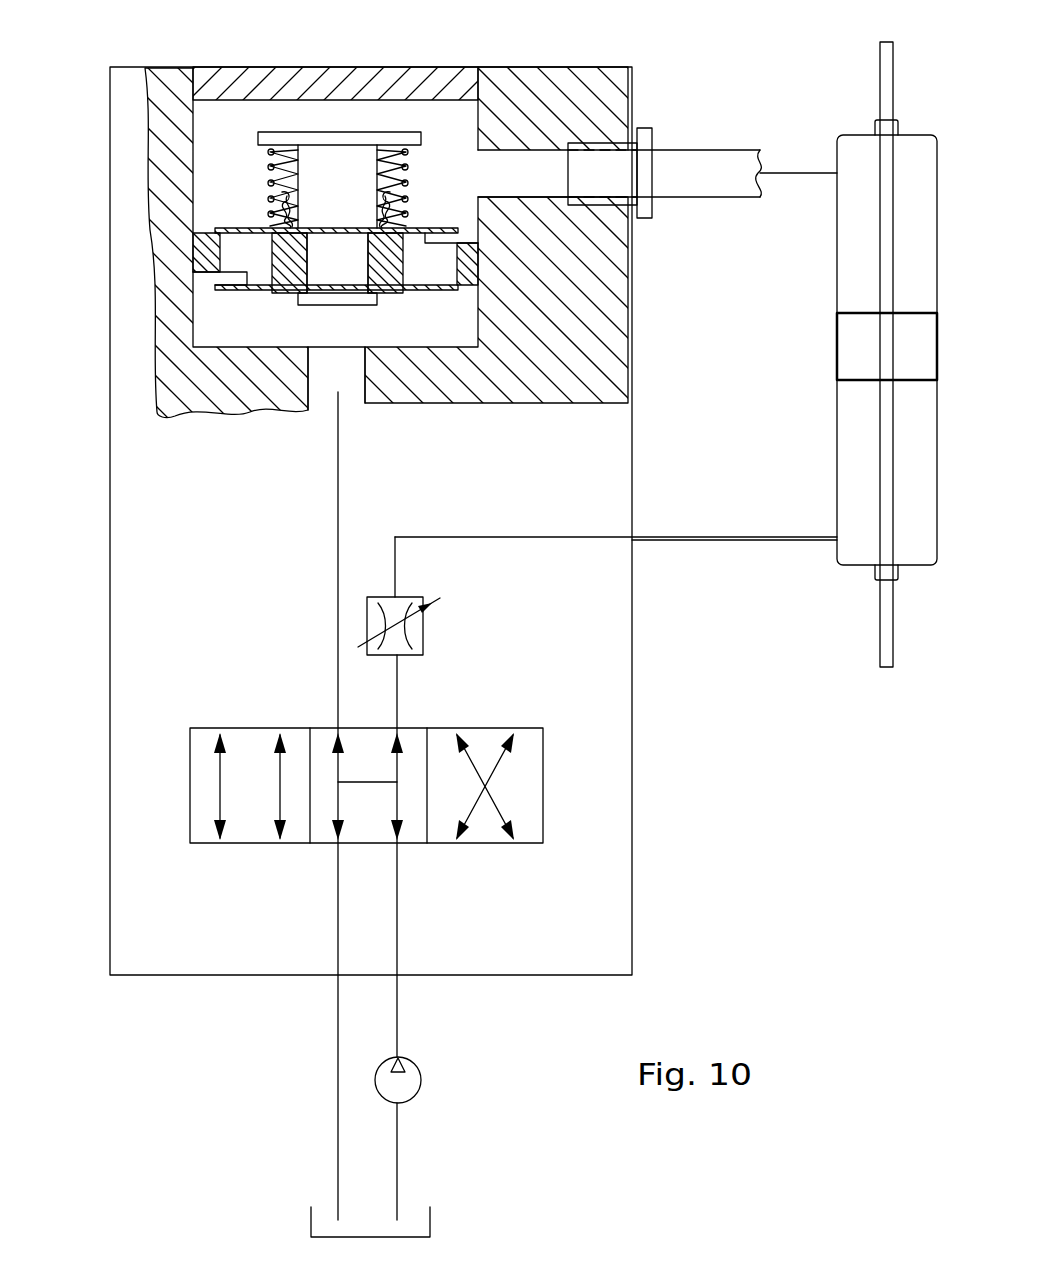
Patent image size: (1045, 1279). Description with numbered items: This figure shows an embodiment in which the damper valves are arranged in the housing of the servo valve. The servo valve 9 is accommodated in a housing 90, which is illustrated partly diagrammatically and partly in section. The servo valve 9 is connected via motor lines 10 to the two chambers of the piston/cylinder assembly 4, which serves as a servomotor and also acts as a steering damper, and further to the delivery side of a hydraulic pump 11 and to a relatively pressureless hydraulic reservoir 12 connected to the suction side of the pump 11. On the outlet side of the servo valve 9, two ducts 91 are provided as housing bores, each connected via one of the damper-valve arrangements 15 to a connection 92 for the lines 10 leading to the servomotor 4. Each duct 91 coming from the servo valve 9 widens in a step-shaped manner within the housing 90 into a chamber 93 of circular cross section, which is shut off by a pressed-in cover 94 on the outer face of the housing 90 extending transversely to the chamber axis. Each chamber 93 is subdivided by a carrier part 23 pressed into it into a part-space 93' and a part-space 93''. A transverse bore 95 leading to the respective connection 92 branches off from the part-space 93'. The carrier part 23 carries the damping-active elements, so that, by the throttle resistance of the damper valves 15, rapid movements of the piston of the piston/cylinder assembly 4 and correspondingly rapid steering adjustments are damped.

The piston/cylinder assembly 4 is at (866, 556).
The servo valve 9 is at (530, 825).
The motor lines 10 is at (737, 540).
The hydraulic pump 11 is at (412, 1092).
The hydraulic reservoir 12 is at (420, 1222).
The damper valve 15 is at (367, 118).
The carrier part 23 is at (201, 232).
The housing 90 is at (613, 705).
The ducts 91 is at (337, 677).
The connection 92 is at (673, 188).
The chamber 93 is at (490, 217).
The part-space 93' is at (364, 188).
The part-space 93'' is at (384, 351).
The cover 94 is at (283, 78).
The transverse bore 95 is at (508, 165).